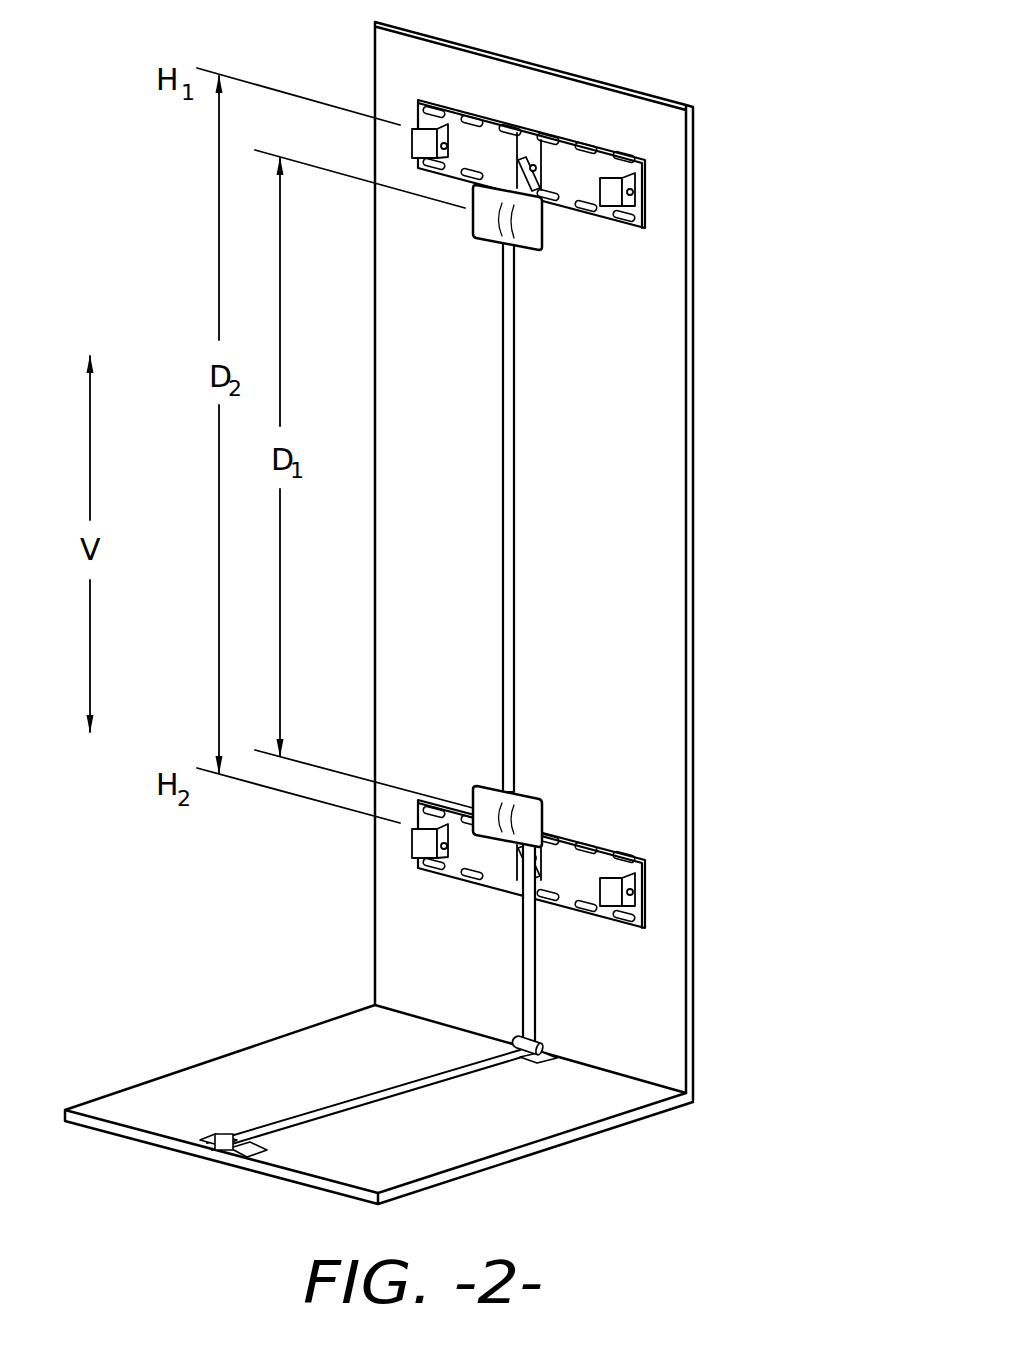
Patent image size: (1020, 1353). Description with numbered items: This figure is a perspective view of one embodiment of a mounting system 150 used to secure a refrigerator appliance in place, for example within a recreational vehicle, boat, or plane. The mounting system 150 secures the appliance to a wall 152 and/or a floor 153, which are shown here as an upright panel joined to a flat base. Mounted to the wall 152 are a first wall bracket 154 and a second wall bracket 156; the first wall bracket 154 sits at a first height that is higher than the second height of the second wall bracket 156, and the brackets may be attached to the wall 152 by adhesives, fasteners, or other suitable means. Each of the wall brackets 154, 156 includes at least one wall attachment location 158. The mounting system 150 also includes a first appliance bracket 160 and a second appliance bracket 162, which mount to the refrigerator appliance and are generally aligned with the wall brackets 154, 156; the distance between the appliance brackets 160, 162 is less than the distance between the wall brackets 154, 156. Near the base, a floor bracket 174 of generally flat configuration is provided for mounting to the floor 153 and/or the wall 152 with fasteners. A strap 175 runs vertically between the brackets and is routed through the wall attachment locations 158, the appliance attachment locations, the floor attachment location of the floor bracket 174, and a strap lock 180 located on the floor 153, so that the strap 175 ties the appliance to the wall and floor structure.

The mounting system 150 is at (717, 73).
The wall 152 is at (695, 563).
The floor 153 is at (563, 1147).
The first wall bracket 154 is at (649, 198).
The second wall bracket 156 is at (649, 900).
The wall attachment location 158 is at (549, 168).
The first appliance bracket 160 is at (471, 210).
The second appliance bracket 162 is at (469, 798).
The floor bracket 174 is at (510, 1028).
The strap 175 is at (516, 532).
The strap lock 180 is at (220, 1121).